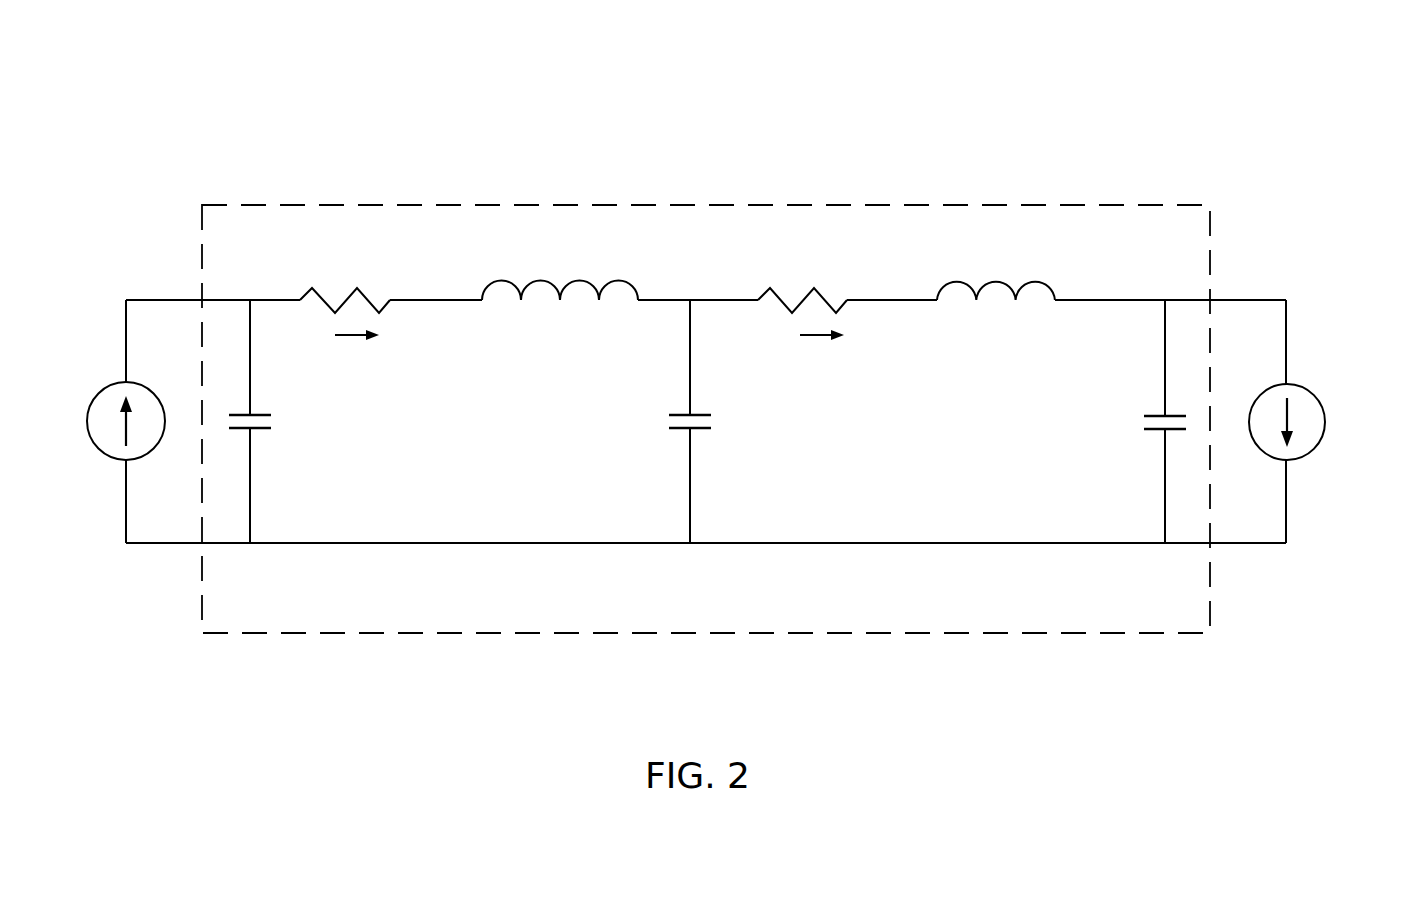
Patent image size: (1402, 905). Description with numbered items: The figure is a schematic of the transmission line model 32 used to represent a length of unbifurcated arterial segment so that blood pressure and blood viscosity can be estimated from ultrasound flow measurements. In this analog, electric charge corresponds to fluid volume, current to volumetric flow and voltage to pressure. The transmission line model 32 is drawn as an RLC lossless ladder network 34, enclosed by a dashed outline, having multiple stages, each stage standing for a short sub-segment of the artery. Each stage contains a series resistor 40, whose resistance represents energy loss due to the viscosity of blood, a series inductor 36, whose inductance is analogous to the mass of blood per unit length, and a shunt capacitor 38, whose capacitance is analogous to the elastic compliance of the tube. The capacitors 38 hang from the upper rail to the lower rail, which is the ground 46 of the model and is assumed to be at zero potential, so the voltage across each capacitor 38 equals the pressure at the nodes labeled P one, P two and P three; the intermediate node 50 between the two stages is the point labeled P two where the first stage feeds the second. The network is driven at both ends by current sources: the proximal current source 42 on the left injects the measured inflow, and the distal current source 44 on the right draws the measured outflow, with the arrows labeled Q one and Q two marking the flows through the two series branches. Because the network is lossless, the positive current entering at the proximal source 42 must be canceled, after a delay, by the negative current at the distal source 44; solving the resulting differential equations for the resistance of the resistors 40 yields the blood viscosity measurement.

The transmission line model 32 is at (1200, 98).
The RLC ladder network 34 is at (425, 205).
The inductor 36 is at (617, 282).
The capacitor 38 is at (259, 432).
The series resistor 40 is at (370, 299).
The proximal current source 42 is at (97, 450).
The distal current source 44 is at (1300, 386).
The ground 46 is at (930, 544).
The intermediate node P2 with capacitor 50 is at (695, 301).